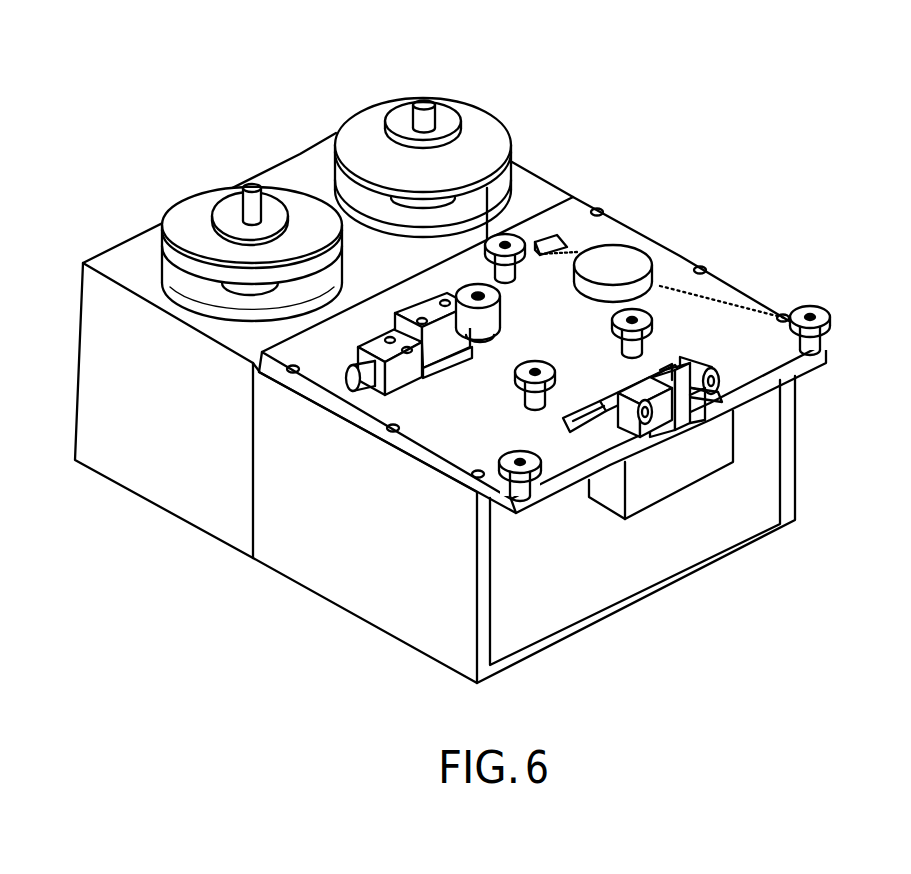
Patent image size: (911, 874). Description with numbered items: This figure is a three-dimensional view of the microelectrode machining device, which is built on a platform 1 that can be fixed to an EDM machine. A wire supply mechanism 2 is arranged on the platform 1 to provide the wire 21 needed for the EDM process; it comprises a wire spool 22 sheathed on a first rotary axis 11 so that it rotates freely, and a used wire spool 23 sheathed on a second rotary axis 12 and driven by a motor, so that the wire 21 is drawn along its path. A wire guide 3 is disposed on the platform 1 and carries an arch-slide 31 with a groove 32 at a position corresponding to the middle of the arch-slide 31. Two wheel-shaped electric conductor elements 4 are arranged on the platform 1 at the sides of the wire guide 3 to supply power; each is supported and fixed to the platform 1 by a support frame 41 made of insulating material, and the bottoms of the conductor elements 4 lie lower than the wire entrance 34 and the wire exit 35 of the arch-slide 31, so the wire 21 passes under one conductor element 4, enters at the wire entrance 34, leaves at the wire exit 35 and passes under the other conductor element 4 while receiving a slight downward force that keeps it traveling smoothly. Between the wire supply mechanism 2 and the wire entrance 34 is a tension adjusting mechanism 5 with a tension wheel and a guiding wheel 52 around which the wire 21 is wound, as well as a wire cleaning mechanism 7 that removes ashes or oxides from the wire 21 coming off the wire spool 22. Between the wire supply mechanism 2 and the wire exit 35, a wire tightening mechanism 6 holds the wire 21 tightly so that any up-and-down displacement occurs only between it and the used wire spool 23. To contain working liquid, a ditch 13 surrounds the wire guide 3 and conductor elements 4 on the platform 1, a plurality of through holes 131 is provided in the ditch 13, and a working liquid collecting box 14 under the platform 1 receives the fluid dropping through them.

The platform 1 is at (690, 260).
The wire supply mechanism 2 is at (331, 94).
The wire guide 3 is at (692, 433).
The electric conductor element 4 is at (722, 375).
The tension adjusting mechanism 5 is at (645, 232).
The wire tightening mechanism 6 is at (447, 345).
The wire cleaning mechanism 7 is at (558, 240).
The first rotary axis 11 is at (424, 102).
The second rotary axis 12 is at (247, 186).
The ditch 13 is at (596, 428).
The working liquid collecting box 14 is at (673, 483).
The wire 21 is at (488, 187).
The wire spool 22 is at (446, 132).
The used wire spool 23 is at (231, 212).
The arch-slide 31 is at (684, 447).
The groove 32 is at (700, 430).
The wire entrance 34 is at (700, 402).
The wire exit 35 is at (667, 402).
The support frame 41 is at (557, 425).
The guiding wheel 52 is at (655, 318).
The through holes 131 is at (592, 433).